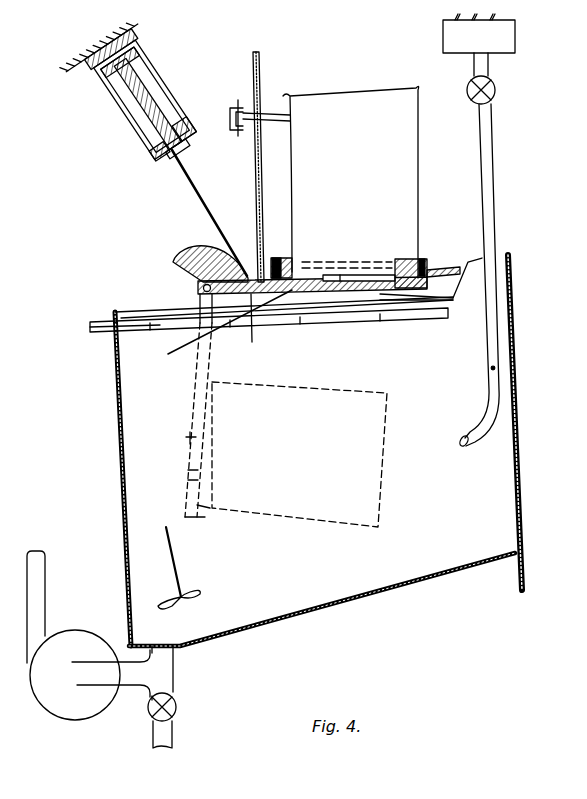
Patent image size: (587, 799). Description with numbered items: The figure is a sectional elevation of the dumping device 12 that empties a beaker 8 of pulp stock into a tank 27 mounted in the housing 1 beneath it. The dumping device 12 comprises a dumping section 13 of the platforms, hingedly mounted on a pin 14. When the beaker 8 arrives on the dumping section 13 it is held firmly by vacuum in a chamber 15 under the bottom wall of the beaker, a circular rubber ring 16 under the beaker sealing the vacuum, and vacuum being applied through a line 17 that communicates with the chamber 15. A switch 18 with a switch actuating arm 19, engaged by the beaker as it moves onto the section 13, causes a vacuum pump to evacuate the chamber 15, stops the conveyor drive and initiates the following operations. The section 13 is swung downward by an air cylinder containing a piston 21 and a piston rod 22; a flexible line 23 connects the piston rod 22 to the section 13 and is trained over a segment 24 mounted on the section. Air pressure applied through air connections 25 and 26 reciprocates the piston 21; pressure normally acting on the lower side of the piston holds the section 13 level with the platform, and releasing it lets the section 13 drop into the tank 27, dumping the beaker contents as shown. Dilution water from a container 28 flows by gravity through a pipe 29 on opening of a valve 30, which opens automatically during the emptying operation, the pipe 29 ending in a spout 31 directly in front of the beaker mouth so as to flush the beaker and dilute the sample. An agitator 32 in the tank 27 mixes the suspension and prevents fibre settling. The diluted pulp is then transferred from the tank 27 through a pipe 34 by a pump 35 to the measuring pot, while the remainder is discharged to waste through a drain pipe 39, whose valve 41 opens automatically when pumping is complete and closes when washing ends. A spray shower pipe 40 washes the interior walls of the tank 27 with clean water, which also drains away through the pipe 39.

The housing 1 is at (524, 566).
The beaker 8 is at (362, 90).
The dumping device 12 is at (138, 248).
The dumping section 13 is at (218, 327).
The pin 14 is at (196, 289).
The chamber 15 is at (352, 281).
The ring 16 is at (400, 277).
The line 17 is at (431, 285).
The switch 18 is at (233, 105).
The switch actuating arm 19 is at (271, 113).
The piston 21 is at (146, 62).
The piston rod 22 is at (147, 96).
The flexible line 23 is at (192, 188).
The segment 24 is at (192, 257).
The air connection 25 is at (92, 63).
The air connection 26 is at (98, 72).
The tank 27 is at (122, 483).
The dilution water container 28 is at (447, 32).
The pipe 29 is at (481, 130).
The valve 30 is at (496, 92).
The spout 31 is at (460, 441).
The agitator 32 is at (172, 562).
The pipe 34 is at (45, 620).
The pump 35 is at (82, 640).
The drain pipe 39 is at (166, 664).
The spray shower pipe 40 is at (137, 320).
The valve 41 is at (172, 702).